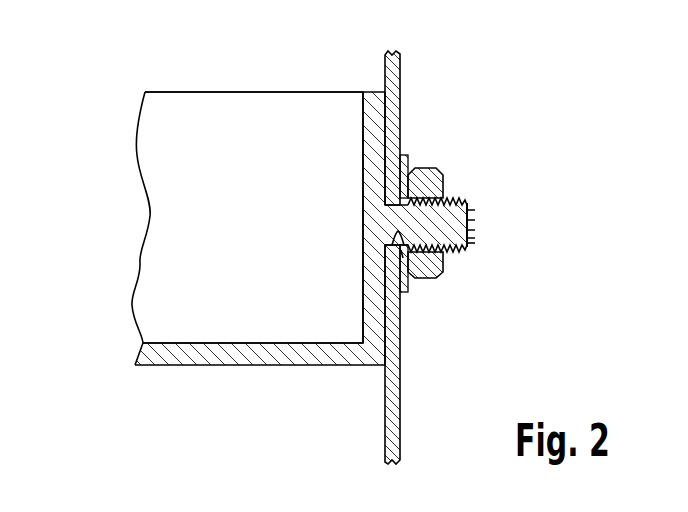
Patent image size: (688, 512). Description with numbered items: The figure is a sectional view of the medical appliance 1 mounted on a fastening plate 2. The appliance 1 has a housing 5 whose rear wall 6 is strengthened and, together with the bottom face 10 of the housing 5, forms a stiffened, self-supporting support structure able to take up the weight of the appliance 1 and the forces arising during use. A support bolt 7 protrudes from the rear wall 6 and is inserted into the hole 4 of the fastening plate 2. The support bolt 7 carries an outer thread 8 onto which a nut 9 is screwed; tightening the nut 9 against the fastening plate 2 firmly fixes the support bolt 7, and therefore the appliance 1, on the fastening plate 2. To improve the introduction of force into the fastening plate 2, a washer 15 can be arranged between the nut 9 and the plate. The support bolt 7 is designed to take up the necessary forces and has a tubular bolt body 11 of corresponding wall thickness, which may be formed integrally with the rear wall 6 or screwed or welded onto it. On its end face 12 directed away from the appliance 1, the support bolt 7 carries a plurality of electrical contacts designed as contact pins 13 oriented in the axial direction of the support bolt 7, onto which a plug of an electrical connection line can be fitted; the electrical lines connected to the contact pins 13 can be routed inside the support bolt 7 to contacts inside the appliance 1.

The appliance 1 is at (136, 74).
The fastening plate 2 is at (393, 73).
The hole 4 is at (405, 247).
The housing 5 is at (165, 163).
The rear wall 6 is at (368, 125).
The support bolt 7 is at (494, 235).
The outer thread 8 is at (453, 200).
The nut 9 is at (428, 185).
The bottom face 10 is at (275, 364).
The bolt body 11 is at (460, 247).
The end face 12 is at (468, 207).
The contact pins 13 is at (468, 240).
The washer 15 is at (402, 258).